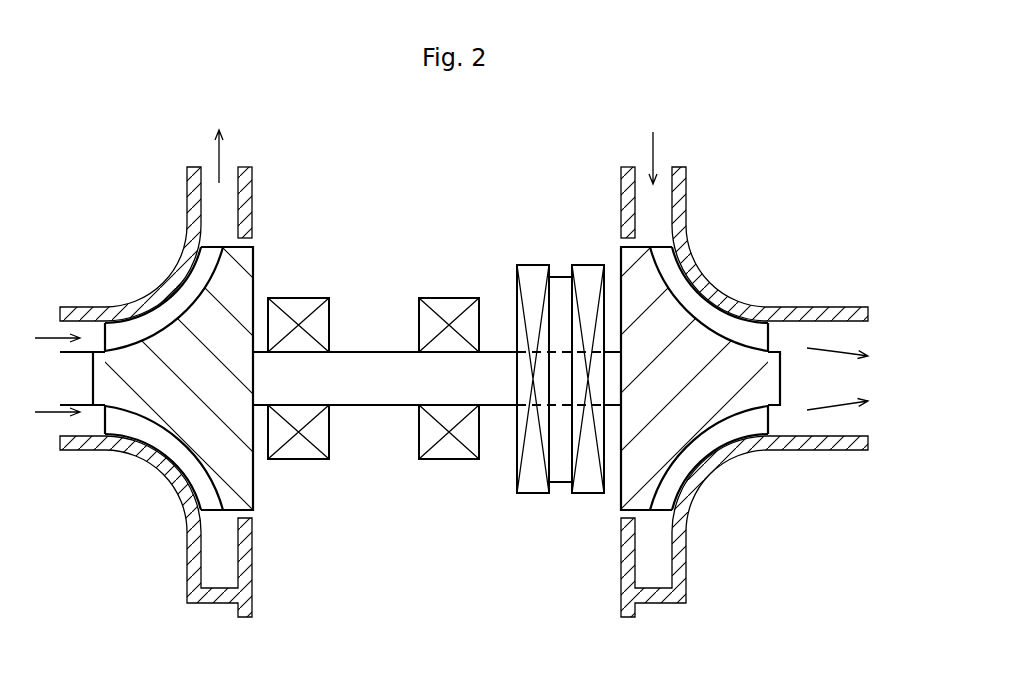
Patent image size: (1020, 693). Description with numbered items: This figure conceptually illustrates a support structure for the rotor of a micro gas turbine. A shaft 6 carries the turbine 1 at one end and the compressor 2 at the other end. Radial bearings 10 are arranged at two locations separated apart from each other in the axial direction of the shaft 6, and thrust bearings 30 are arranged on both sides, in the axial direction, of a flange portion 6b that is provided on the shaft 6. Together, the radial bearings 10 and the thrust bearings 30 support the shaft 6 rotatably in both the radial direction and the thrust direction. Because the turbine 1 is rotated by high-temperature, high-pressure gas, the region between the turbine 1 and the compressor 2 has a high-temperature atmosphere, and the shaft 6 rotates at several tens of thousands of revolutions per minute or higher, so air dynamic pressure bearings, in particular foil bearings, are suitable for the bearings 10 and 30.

The turbine 1 is at (719, 287).
The compressor 2 is at (159, 288).
The shaft 6 is at (378, 385).
The flange portion 6b is at (559, 285).
The radial bearing 10 is at (307, 288).
The thrust bearing 30 is at (589, 483).